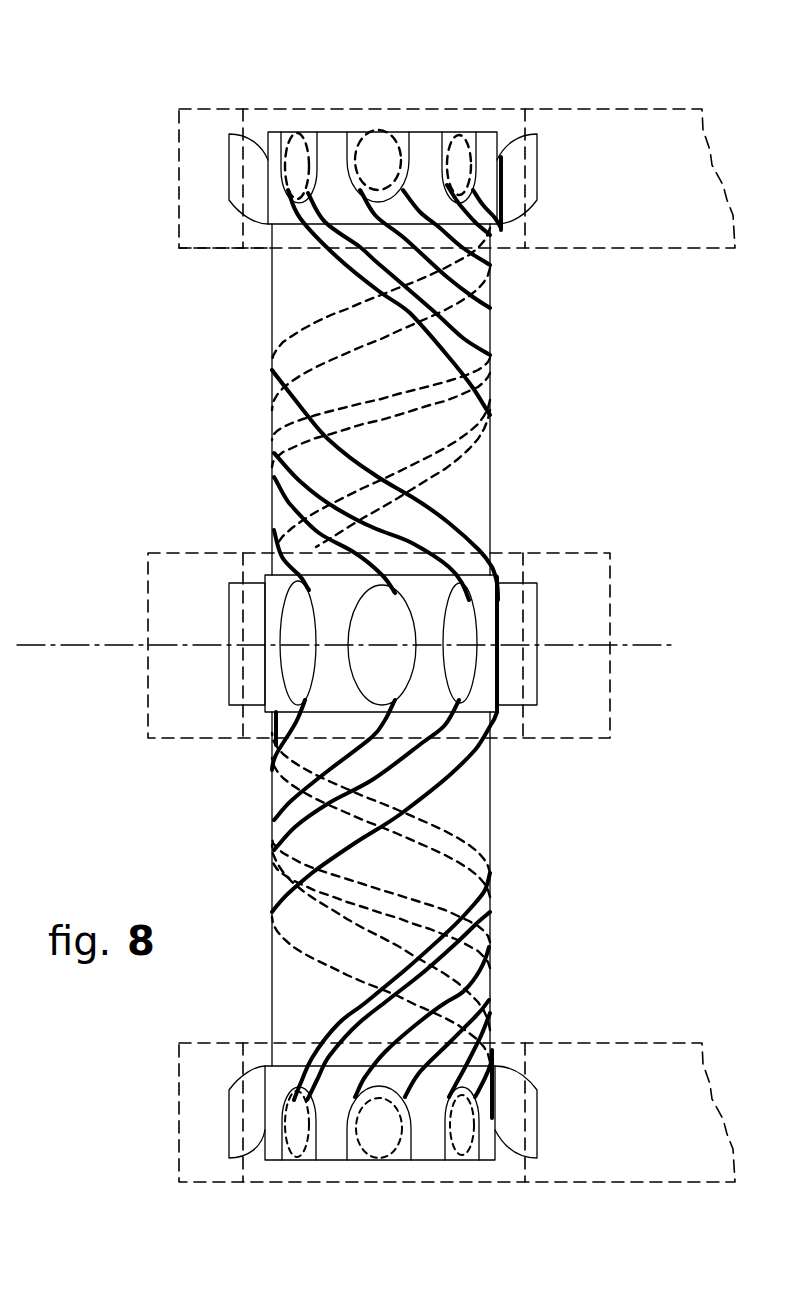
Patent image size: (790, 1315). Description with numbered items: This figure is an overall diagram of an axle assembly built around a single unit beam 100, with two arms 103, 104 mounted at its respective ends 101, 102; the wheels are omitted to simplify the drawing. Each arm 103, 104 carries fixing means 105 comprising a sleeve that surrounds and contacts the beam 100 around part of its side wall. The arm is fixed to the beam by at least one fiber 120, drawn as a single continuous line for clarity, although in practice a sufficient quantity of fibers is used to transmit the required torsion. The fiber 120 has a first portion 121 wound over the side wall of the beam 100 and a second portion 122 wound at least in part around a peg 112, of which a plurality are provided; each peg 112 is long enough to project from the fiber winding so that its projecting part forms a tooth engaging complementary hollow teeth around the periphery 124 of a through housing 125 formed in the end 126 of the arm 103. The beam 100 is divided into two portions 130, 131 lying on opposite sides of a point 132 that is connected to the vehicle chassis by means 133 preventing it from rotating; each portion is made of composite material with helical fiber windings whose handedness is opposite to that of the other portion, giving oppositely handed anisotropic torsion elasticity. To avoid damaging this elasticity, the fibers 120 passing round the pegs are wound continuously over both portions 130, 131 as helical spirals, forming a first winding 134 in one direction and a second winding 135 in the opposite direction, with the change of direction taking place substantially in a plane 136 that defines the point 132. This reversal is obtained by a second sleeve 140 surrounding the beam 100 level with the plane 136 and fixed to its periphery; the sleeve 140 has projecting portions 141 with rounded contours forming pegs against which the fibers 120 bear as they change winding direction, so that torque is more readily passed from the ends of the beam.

The unit beam 100 is at (378, 642).
The end of the beam 101 is at (384, 123).
The end of the beam 102 is at (265, 1062).
The arm 103 is at (457, 181).
The arm 104 is at (590, 1043).
The fixing means 105 is at (457, 129).
The peg 112 is at (233, 182).
The fiber 120 is at (491, 355).
The first portion of the fiber 121 is at (490, 288).
The second portion of the fiber 122 is at (381, 135).
The periphery of the through housing 124 is at (238, 146).
The through housing 125 is at (288, 118).
The end of the arm 126 is at (243, 247).
The portion of the beam 130 is at (272, 498).
The portion of the beam 131 is at (272, 875).
The point of the beam 132 is at (566, 643).
The means preventing rotation 133 is at (560, 553).
The first winding 134 is at (462, 451).
The second winding 135 is at (462, 882).
The plane 136 is at (70, 643).
The second sleeve 140 is at (421, 676).
The projecting portions 141 is at (235, 600).